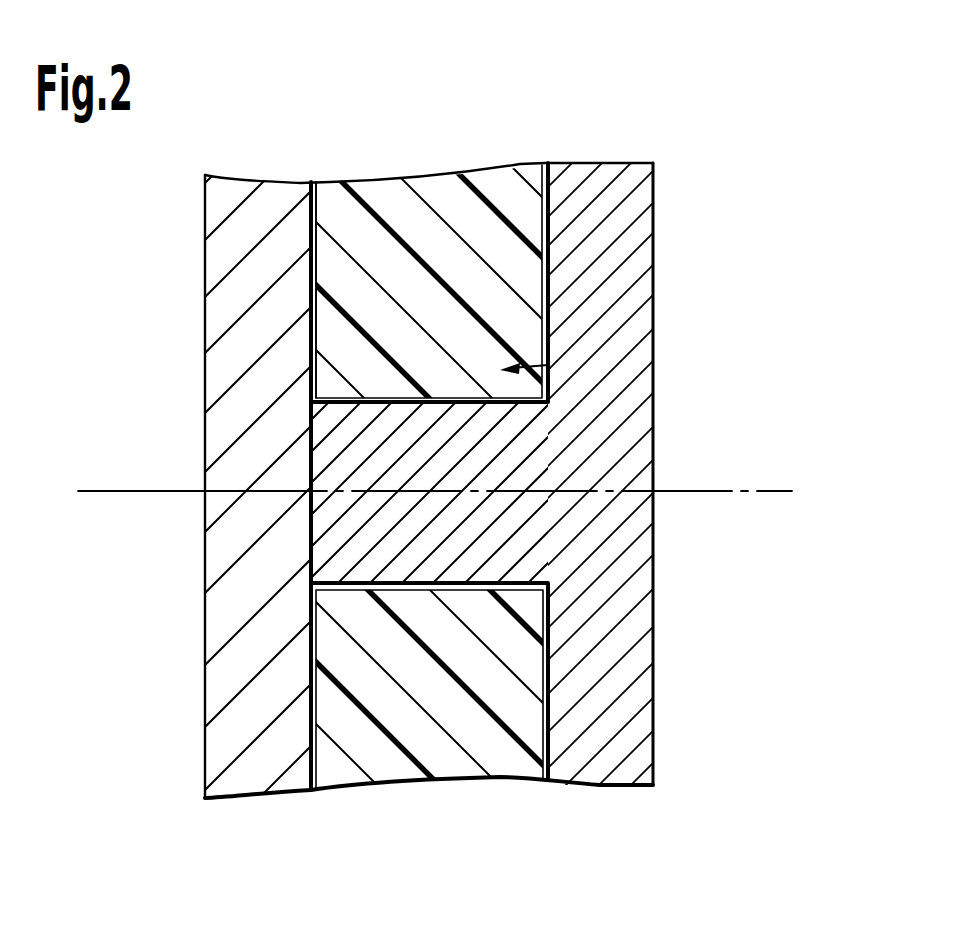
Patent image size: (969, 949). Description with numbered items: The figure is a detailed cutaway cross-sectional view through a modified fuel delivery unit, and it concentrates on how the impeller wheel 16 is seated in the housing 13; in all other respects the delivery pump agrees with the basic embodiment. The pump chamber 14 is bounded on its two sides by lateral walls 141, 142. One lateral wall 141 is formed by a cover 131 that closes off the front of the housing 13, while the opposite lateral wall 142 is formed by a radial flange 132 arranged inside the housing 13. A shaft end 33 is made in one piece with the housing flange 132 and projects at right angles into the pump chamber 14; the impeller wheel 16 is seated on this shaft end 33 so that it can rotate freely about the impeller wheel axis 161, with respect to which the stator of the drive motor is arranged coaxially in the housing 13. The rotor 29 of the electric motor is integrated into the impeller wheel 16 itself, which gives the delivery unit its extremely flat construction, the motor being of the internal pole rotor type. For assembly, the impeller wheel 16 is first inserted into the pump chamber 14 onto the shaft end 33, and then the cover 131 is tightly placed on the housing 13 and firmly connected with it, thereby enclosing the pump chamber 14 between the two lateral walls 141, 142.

The housing 13 is at (590, 152).
The cover 131 is at (225, 636).
The radial flange 132 is at (630, 663).
The lateral wall 141 is at (310, 238).
The lateral wall 142 is at (548, 222).
The pump chamber 14 is at (545, 780).
The impeller wheel 16 is at (520, 311).
The rotor 29 is at (548, 365).
The shaft end 33 is at (345, 447).
The impeller wheel axis 161 is at (760, 491).